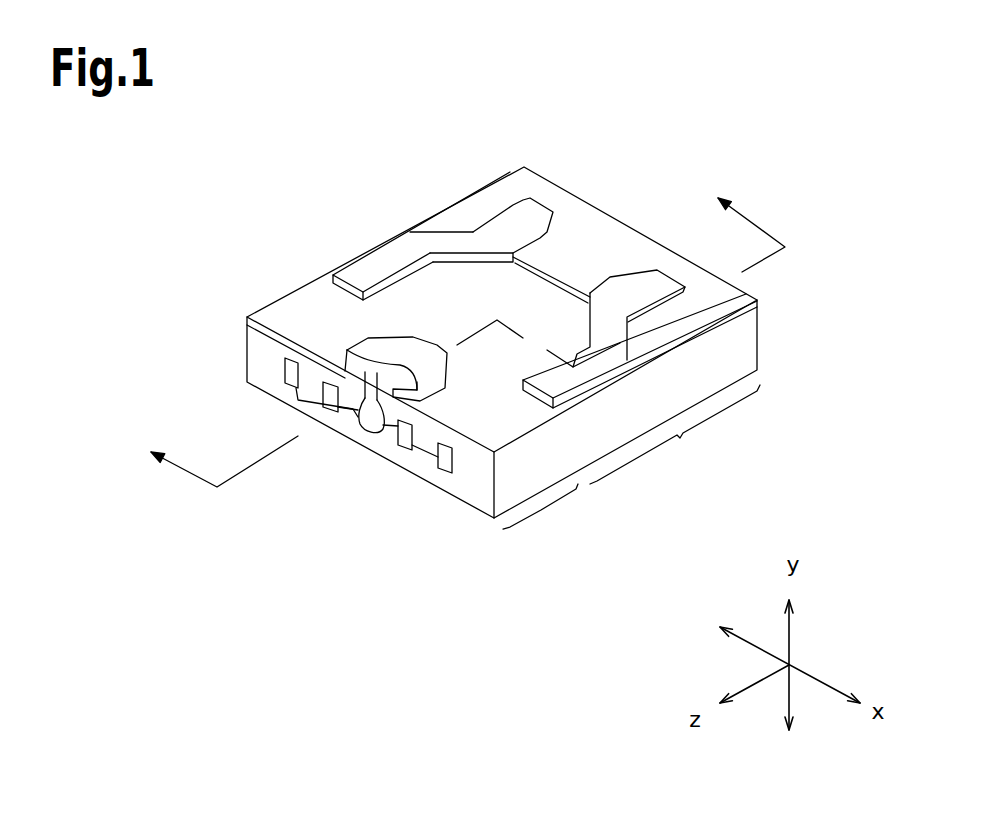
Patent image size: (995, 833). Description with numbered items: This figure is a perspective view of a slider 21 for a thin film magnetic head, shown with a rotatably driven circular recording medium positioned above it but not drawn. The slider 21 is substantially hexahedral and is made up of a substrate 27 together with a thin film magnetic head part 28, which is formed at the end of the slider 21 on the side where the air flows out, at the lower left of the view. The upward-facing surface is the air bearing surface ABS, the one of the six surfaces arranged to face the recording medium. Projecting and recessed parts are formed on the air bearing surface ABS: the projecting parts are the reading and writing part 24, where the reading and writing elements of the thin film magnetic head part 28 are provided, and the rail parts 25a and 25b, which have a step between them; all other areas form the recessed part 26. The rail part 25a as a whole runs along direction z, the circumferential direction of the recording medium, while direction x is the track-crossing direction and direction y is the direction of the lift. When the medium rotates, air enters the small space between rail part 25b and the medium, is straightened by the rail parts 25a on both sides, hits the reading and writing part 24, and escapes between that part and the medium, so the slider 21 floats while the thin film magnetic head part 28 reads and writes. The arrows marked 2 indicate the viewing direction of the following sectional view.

The slider 21 is at (331, 208).
The reading and writing part 24 is at (350, 351).
The rail part 25a is at (527, 215).
The rail part 25b is at (563, 205).
The recessed part 26 is at (313, 297).
The substrate 27 is at (675, 434).
The thin film magnetic head part 28 is at (540, 511).
The air bearing surface ABS is at (385, 260).
The viewing direction of FIG. 2 is at (452, 331).